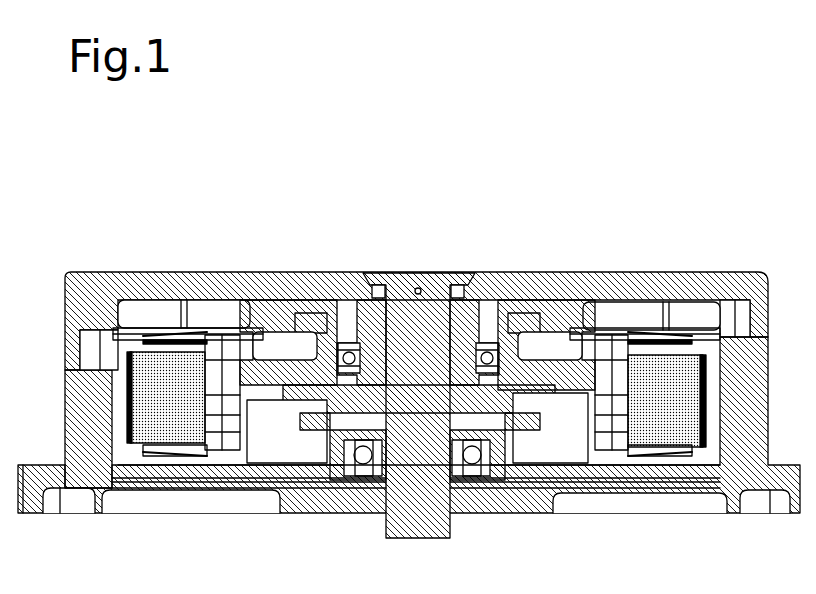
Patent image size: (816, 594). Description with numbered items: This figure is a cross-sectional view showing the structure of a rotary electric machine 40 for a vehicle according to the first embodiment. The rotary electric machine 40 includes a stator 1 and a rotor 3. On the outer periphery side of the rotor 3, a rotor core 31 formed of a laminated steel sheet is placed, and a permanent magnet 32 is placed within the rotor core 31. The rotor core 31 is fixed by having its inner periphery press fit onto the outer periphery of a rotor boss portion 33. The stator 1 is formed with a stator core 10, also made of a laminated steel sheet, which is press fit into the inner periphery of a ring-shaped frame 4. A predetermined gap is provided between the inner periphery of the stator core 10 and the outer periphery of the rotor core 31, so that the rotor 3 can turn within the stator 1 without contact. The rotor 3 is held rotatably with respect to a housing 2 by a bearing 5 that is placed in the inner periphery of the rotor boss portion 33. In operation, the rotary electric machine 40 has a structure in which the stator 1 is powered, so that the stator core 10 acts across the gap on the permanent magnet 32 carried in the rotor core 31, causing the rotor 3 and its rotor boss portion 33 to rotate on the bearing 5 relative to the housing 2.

The stator 1 is at (173, 342).
The housing 2 is at (78, 293).
The rotor 3 is at (242, 375).
The ring-shaped frame 4 is at (115, 443).
The bearing 5 is at (353, 349).
The stator core 10 is at (155, 402).
The rotor core 31 is at (207, 395).
The permanent magnet 32 is at (212, 430).
The rotor boss portion 33 is at (288, 375).
The rotary electric machine 40 is at (597, 271).